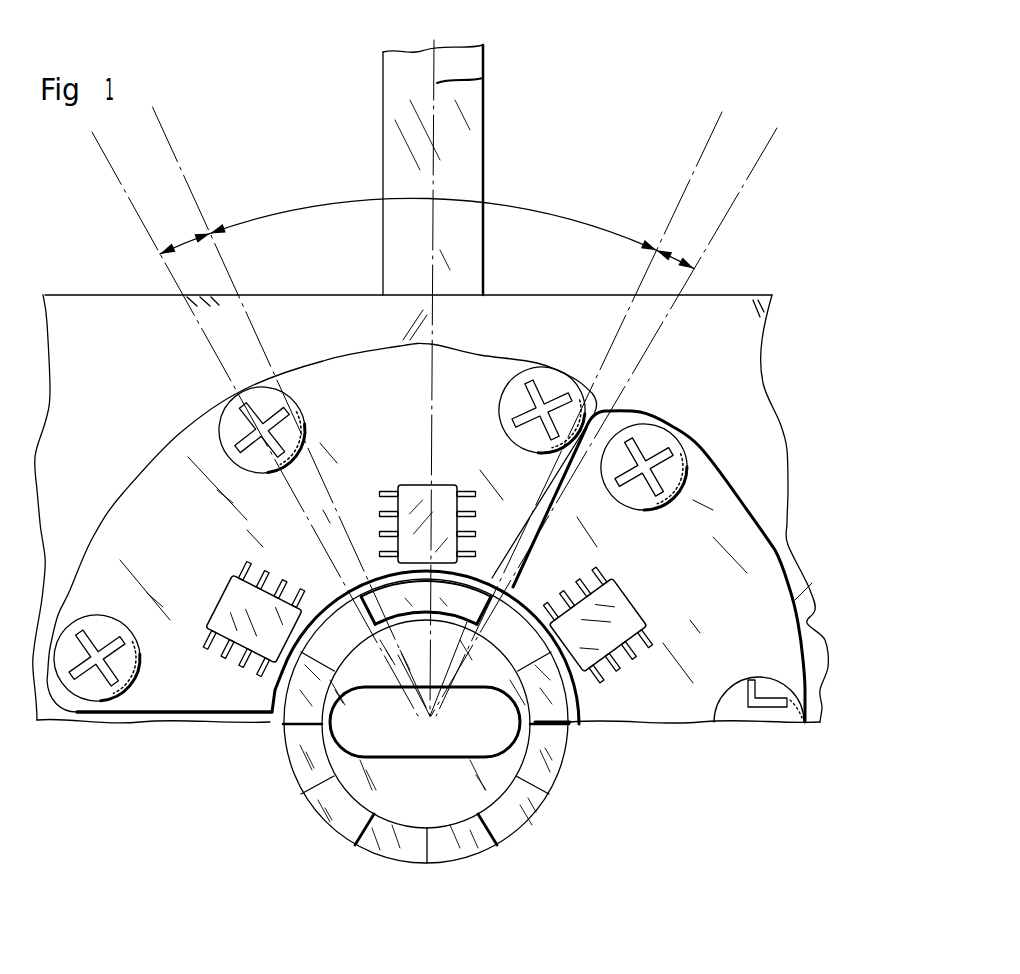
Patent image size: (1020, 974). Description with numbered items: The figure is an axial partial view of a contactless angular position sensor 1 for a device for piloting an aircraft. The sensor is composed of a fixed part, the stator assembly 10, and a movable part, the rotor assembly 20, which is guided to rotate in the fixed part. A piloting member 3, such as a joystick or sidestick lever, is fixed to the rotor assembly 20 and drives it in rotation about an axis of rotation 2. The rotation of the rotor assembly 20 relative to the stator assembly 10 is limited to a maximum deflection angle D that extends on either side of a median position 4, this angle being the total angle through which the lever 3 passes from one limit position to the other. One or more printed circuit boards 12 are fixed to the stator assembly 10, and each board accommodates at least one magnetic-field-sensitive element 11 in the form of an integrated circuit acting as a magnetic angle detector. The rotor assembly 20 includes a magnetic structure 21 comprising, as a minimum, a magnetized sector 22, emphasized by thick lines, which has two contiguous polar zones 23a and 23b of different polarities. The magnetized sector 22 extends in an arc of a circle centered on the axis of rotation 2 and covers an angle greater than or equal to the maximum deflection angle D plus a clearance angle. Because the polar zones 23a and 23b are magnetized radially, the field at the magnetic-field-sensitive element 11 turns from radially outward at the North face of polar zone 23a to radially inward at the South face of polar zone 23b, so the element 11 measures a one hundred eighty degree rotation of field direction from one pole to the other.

The contactless angular position sensor 1 is at (297, 143).
The axis of rotation 2 is at (430, 716).
The piloting member 3 is at (470, 158).
The median position 4 is at (483, 77).
The stator assembly 10 is at (803, 437).
The magnetic-field-sensitive element 11 is at (407, 485).
The printed circuit board 12 is at (484, 366).
The rotor assembly 20 is at (262, 779).
The magnetic structure 21 is at (537, 800).
The magnetized sector 22 is at (470, 625).
The polar zone 23a is at (264, 703).
The polar zone 23b is at (570, 722).
The maximum deflection angle D is at (588, 221).